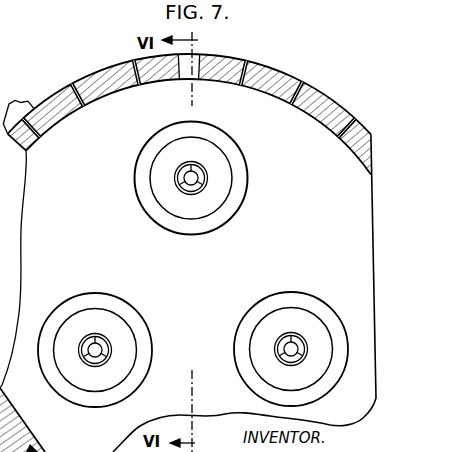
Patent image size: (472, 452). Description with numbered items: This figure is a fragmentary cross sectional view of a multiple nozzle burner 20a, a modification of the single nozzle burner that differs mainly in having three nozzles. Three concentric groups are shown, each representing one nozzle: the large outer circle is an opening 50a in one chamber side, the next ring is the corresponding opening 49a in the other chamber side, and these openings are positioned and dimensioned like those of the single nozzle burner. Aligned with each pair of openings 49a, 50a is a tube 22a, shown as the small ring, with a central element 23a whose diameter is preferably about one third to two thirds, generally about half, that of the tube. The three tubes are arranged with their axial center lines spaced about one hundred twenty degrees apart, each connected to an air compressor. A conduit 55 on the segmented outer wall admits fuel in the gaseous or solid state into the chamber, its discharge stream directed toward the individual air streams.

The multiple nozzle burner 20a is at (305, 72).
The conduit 55 is at (17, 102).
The openings 50a is at (229, 139).
The openings 49a is at (228, 166).
The tube 22a is at (207, 177).
The element 23a is at (195, 184).